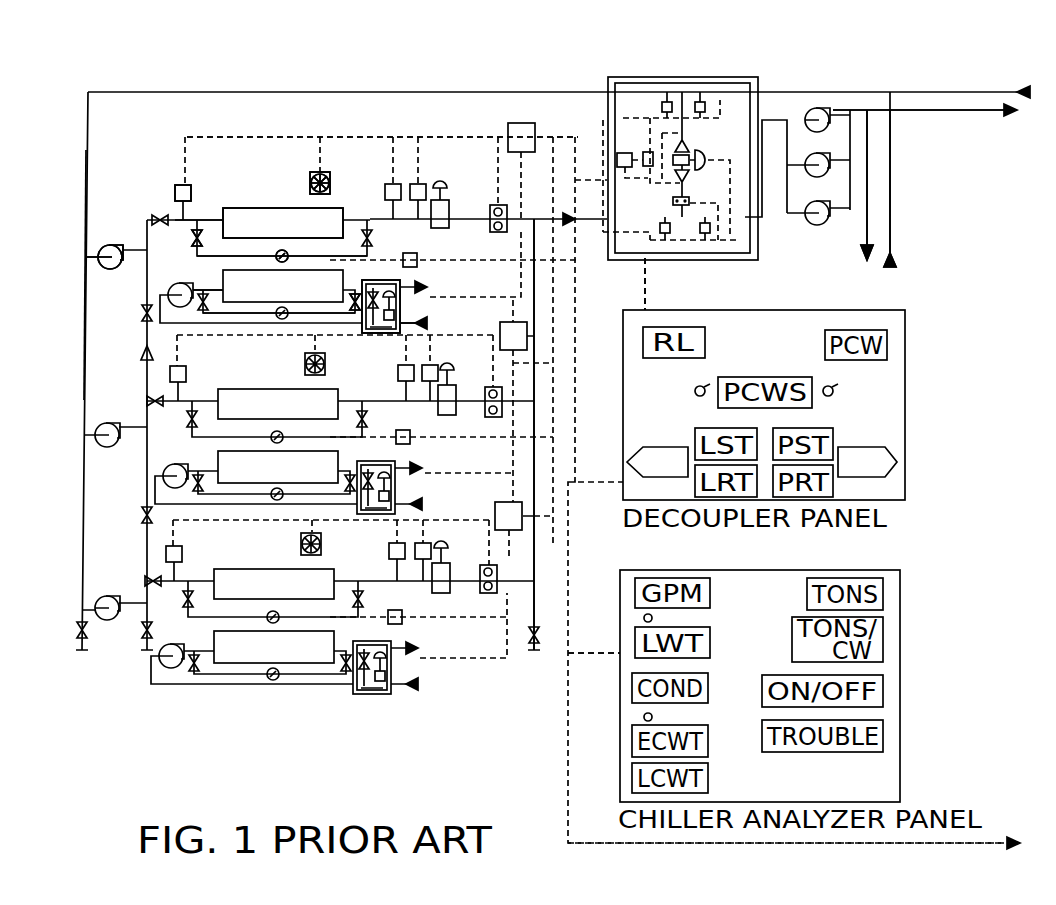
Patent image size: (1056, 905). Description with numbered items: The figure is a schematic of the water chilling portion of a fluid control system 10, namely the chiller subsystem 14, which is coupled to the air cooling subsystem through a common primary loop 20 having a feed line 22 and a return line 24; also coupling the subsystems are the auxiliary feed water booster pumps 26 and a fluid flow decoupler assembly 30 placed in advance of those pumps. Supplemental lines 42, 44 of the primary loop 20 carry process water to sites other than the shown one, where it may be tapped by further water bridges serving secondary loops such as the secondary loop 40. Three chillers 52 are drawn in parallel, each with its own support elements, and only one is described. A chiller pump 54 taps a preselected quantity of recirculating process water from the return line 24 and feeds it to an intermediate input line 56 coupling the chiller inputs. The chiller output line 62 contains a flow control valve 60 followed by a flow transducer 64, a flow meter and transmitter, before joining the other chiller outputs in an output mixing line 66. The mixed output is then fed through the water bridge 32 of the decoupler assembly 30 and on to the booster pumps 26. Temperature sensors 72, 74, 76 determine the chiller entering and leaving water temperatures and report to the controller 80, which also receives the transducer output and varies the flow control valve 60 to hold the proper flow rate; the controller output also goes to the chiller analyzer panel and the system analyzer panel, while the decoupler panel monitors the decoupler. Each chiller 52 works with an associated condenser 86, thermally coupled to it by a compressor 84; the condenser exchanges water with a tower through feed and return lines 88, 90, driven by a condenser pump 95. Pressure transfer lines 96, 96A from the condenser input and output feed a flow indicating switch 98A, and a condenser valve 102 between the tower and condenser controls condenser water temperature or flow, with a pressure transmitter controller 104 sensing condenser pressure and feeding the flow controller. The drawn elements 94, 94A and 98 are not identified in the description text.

The system 10 is at (567, 85).
The chiller subsystem 14 is at (198, 92).
The primary loop 20 is at (950, 88).
The feed line 22 is at (967, 112).
The return line 24 is at (990, 92).
The booster pumps 26 is at (829, 200).
The decoupler assembly 30 is at (728, 78).
The water bridge 32 is at (652, 152).
The secondary loop 40 is at (890, 160).
The supplemental line 42 is at (868, 206).
The supplemental line 44 is at (890, 240).
The chiller 52 is at (242, 207).
The chiller pump 54 is at (112, 269).
The intermediate input line 56 is at (180, 288).
The flow control valve 60 is at (468, 218).
The output line 62 is at (472, 213).
The flow transducer 64 is at (512, 220).
The output mixing line 66 is at (647, 276).
The temperature sensor 72 is at (175, 193).
The temperature sensor 74 is at (393, 184).
The temperature sensor 76 is at (418, 184).
The controller 80 is at (522, 123).
The compressor 84 is at (324, 172).
The condenser 86 is at (98, 258).
The feed line 88 is at (418, 323).
The return line 90 is at (345, 235).
The evaporator outlet line 94 is at (235, 257).
The evaporator outlet temperature gauge 94A is at (282, 250).
The condenser pump 95 is at (240, 313).
The pressure transfer line 96 is at (78, 344).
The pressure transfer line 96A is at (375, 333).
The evaporator inlet line 98 is at (232, 204).
The flow indicating switch 98A is at (350, 303).
The condenser valve 102 is at (97, 423).
The pressure transmitter controller 104 is at (648, 300).